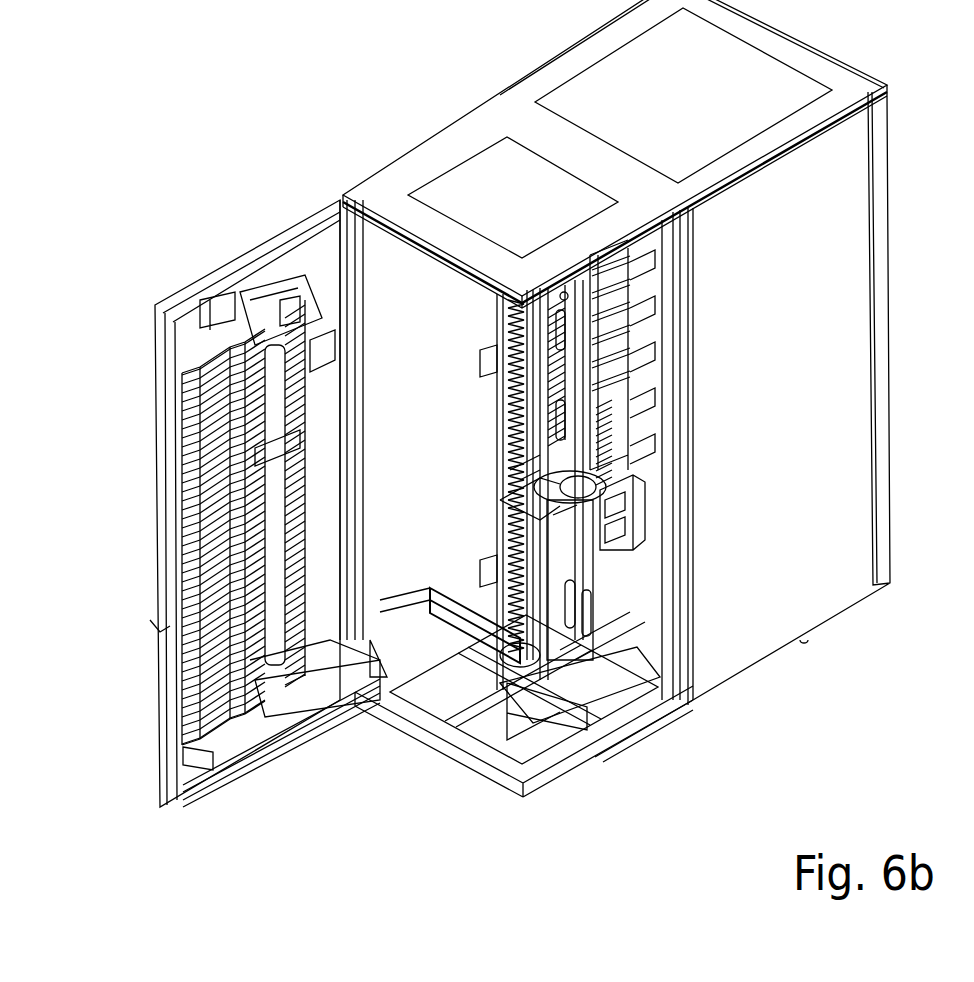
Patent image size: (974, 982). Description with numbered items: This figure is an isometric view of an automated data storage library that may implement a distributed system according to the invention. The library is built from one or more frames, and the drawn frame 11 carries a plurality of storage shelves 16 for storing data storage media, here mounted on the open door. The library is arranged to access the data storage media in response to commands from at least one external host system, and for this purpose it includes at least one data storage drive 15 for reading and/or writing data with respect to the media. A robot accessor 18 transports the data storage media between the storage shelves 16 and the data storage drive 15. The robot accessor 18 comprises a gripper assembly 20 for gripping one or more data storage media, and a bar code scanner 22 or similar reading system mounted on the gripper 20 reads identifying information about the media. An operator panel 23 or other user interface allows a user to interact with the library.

The frame 11 is at (437, 803).
The data storage drive 15 is at (640, 293).
The storage shelves 16 is at (176, 625).
The robot accessor 18 is at (560, 712).
The gripper assembly 20 is at (640, 502).
The bar code scanner 22 is at (540, 537).
The operator panel 23 is at (320, 335).